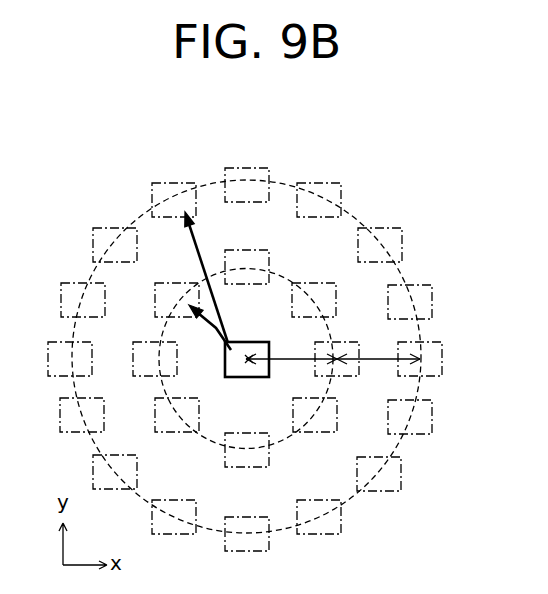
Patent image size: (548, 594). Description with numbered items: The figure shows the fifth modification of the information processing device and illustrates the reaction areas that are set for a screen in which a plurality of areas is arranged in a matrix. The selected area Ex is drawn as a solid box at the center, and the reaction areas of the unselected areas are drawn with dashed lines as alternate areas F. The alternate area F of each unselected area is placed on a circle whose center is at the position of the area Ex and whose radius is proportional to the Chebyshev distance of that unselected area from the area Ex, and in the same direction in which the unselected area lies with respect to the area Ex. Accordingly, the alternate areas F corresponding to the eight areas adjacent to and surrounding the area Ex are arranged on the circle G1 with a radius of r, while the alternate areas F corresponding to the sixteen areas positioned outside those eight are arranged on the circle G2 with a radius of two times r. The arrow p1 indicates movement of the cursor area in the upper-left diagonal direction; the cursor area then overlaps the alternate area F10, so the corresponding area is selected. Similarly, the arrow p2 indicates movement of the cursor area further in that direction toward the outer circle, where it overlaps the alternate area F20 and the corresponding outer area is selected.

The alternate area F20 is at (172, 183).
The alternate area F is at (342, 193).
The alternate area F10 is at (155, 298).
The circle G1 is at (285, 276).
The circle G2 is at (403, 278).
The area Ex is at (238, 342).
The arrow p1 is at (222, 338).
The arrow p2 is at (199, 250).
The radius r is at (333, 368).